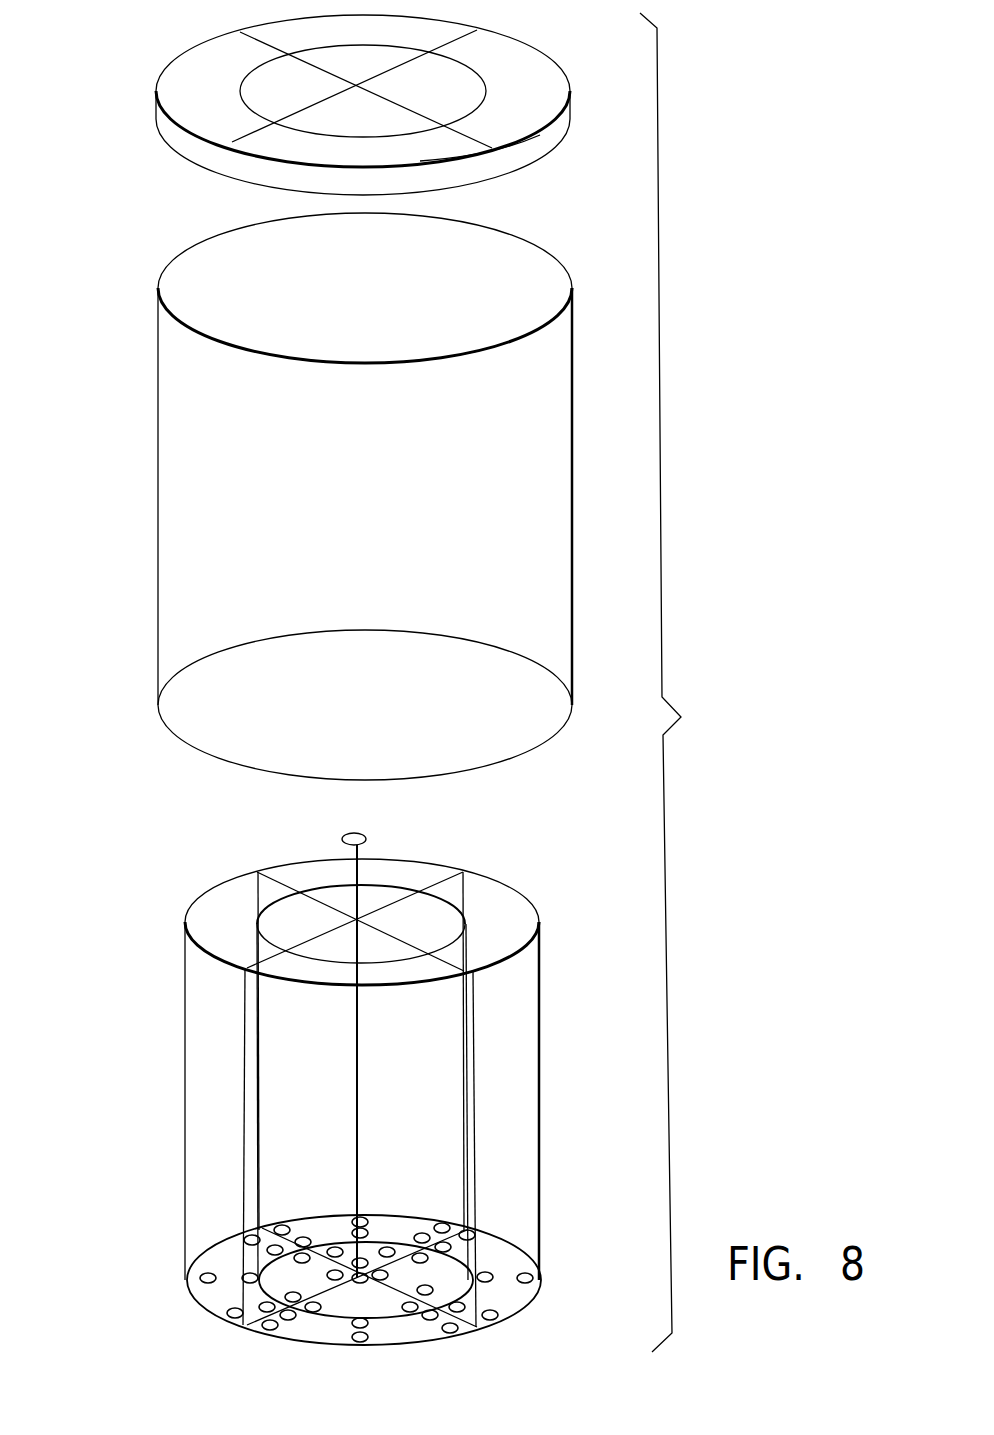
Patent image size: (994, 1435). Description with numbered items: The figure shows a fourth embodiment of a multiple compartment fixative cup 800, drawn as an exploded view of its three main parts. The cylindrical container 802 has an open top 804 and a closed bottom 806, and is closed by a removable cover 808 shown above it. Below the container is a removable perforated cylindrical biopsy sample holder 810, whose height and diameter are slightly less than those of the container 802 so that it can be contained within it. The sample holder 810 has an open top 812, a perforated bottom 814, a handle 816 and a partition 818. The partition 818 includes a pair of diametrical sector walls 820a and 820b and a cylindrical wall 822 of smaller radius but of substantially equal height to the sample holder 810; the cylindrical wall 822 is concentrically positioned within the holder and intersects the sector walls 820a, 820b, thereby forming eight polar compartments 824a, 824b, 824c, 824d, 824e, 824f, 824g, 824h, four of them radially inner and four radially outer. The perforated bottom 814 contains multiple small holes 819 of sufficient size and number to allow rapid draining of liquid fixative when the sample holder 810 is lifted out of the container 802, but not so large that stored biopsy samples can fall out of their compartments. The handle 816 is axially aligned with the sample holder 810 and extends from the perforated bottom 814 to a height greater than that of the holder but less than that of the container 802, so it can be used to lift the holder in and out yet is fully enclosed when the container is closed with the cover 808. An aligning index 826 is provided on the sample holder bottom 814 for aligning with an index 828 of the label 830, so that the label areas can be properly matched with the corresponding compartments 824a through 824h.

The multiple compartment fixative cup 800 is at (714, 538).
The cylindrical container 802 is at (291, 496).
The open top 804 is at (215, 247).
The closed bottom 806 is at (194, 745).
The removable cover 808 is at (374, 105).
The biopsy sample holder 810 is at (373, 1086).
The open top 812 is at (522, 910).
The perforated bottom 814 is at (402, 1338).
The handle 816 is at (370, 838).
The partition 818 is at (473, 987).
The small holes 819 is at (250, 1237).
The diametrical sector wall 820a is at (450, 880).
The diametrical sector wall 820b is at (447, 957).
The cylindrical wall 822 is at (397, 887).
The polar compartment 824a is at (267, 935).
The polar compartment 824b is at (320, 897).
The polar compartment 824c is at (445, 912).
The polar compartment 824d is at (342, 948).
The polar compartment 824e is at (220, 898).
The polar compartment 824f is at (313, 868).
The polar compartment 824g is at (525, 923).
The polar compartment 824h is at (277, 968).
The aligning index 826 is at (263, 1327).
The index 828 is at (262, 98).
The label 830 is at (520, 117).